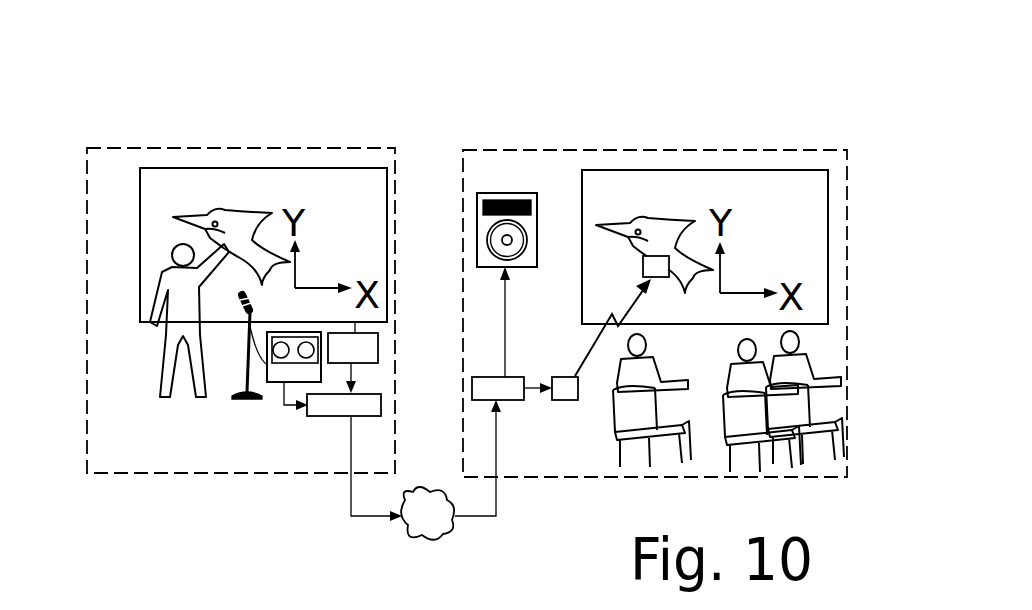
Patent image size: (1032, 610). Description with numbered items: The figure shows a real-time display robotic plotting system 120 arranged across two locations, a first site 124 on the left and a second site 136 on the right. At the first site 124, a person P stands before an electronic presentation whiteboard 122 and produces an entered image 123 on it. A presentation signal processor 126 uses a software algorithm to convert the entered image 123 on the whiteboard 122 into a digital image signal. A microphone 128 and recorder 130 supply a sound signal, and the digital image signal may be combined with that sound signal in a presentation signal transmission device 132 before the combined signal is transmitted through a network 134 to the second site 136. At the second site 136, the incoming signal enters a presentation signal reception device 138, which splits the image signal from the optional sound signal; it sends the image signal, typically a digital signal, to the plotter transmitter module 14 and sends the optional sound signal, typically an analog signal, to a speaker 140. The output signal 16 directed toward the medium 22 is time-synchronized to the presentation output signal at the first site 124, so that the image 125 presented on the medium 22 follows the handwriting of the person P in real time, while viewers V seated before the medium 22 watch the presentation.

The real-time display robotic plotting system 120 is at (702, 112).
The electronic presentation whiteboard 122 is at (282, 168).
The entered image 123 is at (207, 215).
The first site 124 is at (340, 148).
The image 125 is at (630, 223).
The presentation signal processor 126 is at (378, 348).
The microphone 128 is at (240, 372).
The recorder 130 is at (282, 382).
The presentation signal transmission device 132 is at (318, 417).
The network 134 is at (440, 534).
The second site 136 is at (524, 150).
The presentation signal reception device 138 is at (508, 401).
The speaker 140 is at (478, 228).
The plotter transmitter module 14 is at (572, 400).
The output signal 16 is at (587, 353).
The medium 22 is at (830, 228).
The person P is at (163, 275).
The viewers V is at (827, 358).